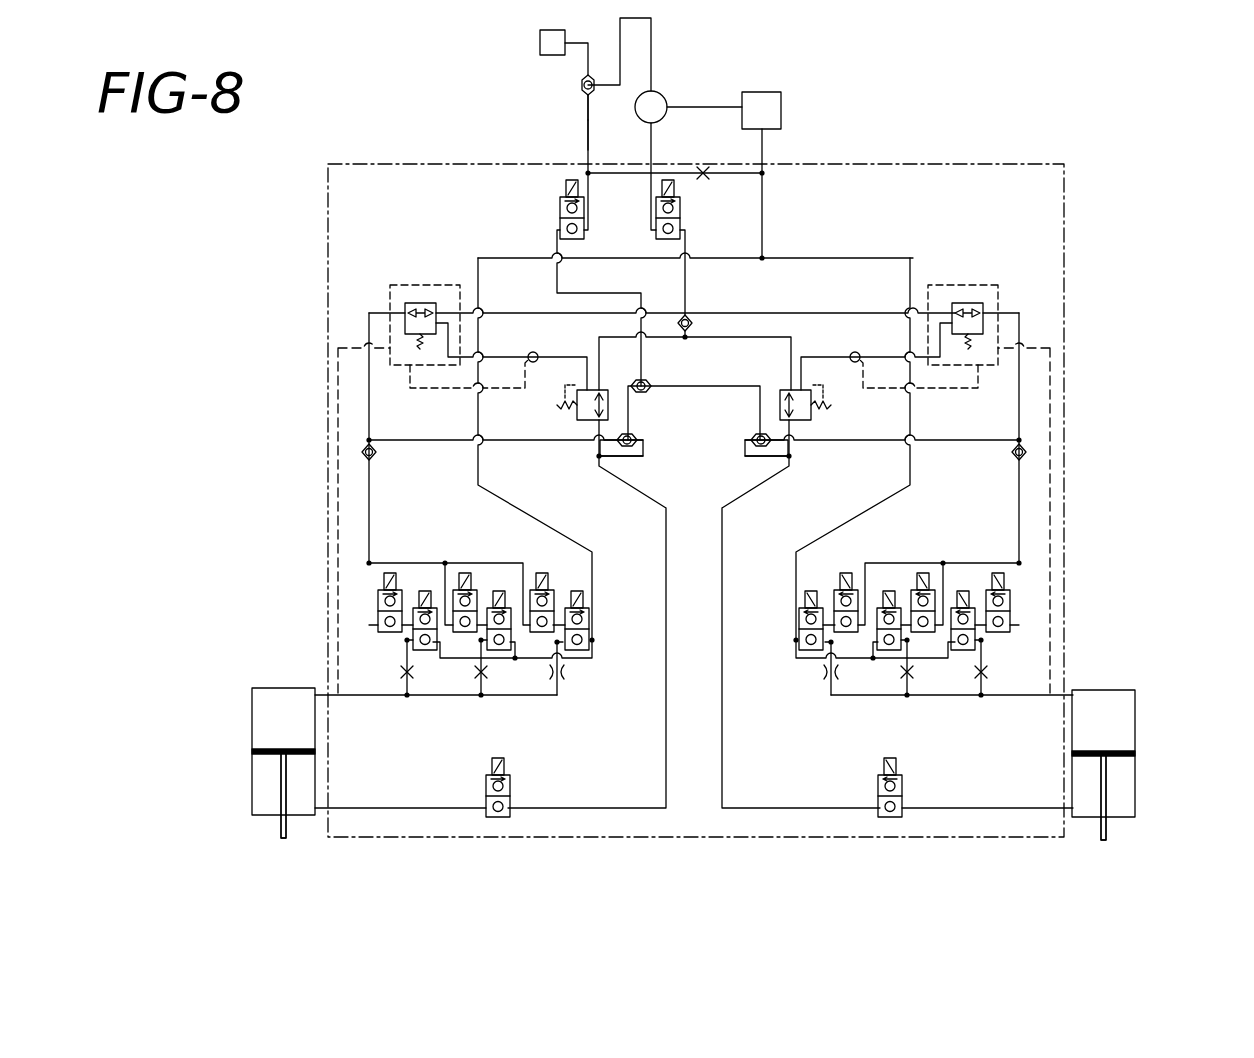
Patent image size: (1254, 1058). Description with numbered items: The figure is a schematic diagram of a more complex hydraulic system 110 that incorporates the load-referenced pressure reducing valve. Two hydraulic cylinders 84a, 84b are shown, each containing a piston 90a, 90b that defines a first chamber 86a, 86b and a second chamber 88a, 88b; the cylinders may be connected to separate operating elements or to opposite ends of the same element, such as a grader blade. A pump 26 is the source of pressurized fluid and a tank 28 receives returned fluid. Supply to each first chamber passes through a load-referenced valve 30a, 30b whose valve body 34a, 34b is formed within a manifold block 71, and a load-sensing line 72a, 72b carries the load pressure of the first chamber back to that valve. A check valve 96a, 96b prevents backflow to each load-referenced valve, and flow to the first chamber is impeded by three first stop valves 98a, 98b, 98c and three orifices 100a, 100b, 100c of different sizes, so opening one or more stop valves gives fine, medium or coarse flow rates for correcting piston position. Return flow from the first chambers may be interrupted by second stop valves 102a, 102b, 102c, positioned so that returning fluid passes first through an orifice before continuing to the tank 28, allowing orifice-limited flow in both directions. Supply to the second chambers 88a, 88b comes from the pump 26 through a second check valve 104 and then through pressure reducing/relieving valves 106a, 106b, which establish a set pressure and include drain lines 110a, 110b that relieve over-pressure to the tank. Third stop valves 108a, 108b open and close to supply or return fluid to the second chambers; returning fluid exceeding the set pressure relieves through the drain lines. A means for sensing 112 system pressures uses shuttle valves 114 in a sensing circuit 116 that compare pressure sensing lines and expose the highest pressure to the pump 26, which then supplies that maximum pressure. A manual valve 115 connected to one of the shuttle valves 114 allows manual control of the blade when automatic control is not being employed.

The pump 26 is at (660, 93).
The tank 28 is at (781, 107).
The load-referenced pressure reducing valve 30a is at (420, 303).
The load-referenced pressure reducing valve 30b is at (970, 302).
The valve body 34a is at (397, 287).
The valve body 34b is at (994, 287).
The manifold block 71 is at (328, 322).
The load-sensing line 72a is at (338, 400).
The load-sensing line 72b is at (1050, 400).
The hydraulic cylinder 84a is at (290, 680).
The hydraulic cylinder 84b is at (1100, 680).
The first chamber 86a is at (252, 705).
The first chamber 86b is at (1135, 715).
The second chamber 88a is at (252, 768).
The second chamber 88b is at (1135, 785).
The piston 90a is at (281, 823).
The piston 90b is at (1106, 824).
The check valve 96a is at (362, 452).
The check valve 96b is at (1026, 452).
The first stop valve 98a is at (390, 572).
The first stop valve 98b is at (465, 572).
The first stop valve 98c is at (545, 572).
The orifice 100a is at (400, 675).
The orifice 100b is at (475, 676).
The orifice 100c is at (563, 673).
The second stop valve 102a is at (423, 652).
The second stop valve 102b is at (508, 655).
The second stop valve 102c is at (594, 638).
The second check valve 104 is at (689, 327).
The pressure reducing/relieving valve 106a is at (577, 420).
The pressure reducing/relieving valve 106b is at (811, 420).
The third stop valve 108a is at (486, 790).
The third stop valve 108b is at (880, 790).
The hydraulic system 110 is at (262, 216).
The drain line 110a is at (580, 378).
The drain line 110b is at (808, 378).
The means for sensing system pressures 112 is at (591, 100).
The shuttle valve 114 is at (581, 85).
The manual valve 115 is at (540, 43).
The sensing circuit 116 is at (588, 125).